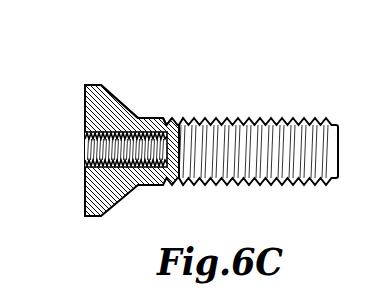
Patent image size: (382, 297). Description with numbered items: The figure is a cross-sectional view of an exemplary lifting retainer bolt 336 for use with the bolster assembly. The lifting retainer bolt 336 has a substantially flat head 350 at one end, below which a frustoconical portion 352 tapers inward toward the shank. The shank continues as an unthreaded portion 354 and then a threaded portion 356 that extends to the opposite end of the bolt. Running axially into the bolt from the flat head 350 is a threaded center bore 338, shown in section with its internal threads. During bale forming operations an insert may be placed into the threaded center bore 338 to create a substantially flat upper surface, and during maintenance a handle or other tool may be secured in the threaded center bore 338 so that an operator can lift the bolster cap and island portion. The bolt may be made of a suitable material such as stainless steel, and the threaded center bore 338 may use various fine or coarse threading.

The flat head 350 is at (85, 115).
The frustoconical portion 352 is at (117, 100).
The lifting retainer bolt 336 is at (153, 117).
The unthreaded portion 354 is at (165, 117).
The threaded portion 356 is at (283, 118).
The threaded center bore 338 is at (90, 153).